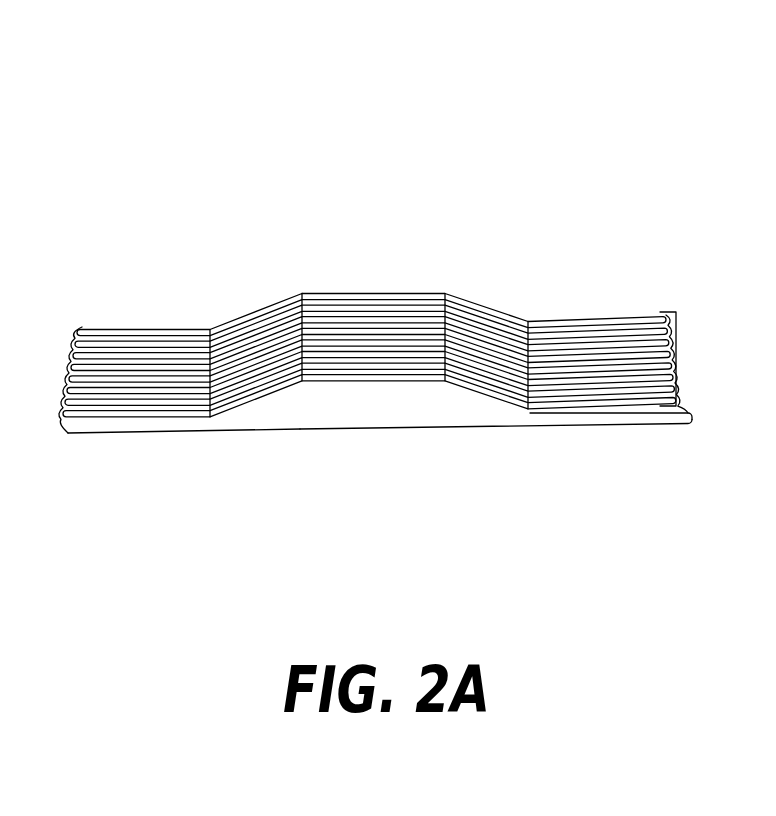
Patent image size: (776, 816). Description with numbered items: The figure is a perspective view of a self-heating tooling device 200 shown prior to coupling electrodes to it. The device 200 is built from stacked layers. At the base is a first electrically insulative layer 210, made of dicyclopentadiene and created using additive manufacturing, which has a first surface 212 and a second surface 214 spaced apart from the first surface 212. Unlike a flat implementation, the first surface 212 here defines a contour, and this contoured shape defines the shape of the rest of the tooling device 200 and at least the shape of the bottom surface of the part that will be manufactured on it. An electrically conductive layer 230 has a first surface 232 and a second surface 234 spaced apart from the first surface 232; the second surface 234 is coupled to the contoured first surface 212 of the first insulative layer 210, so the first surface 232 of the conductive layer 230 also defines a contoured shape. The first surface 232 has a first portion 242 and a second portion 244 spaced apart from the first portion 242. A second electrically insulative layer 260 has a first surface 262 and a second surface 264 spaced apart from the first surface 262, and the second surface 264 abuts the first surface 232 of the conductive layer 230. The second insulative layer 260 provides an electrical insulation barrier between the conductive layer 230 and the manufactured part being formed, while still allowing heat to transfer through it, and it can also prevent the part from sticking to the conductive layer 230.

The self-heating tooling device 200 is at (555, 117).
The first electrically insulative layer 210 is at (390, 442).
The first surface of the first insulative layer 212 is at (285, 388).
The second surface of the first insulative layer 214 is at (200, 432).
The electrically conductive layer 230 is at (590, 408).
The first surface of the conductive layer 232 is at (688, 400).
The second surface of the conductive layer 234 is at (645, 408).
The first portion of the first surface of the conductive layer 242 is at (115, 358).
The second portion of the first surface of the conductive layer 244 is at (632, 337).
The second electrically insulative layer 260 is at (557, 318).
The first surface of the second insulative layer 262 is at (608, 317).
The second surface of the second insulative layer 264 is at (663, 328).